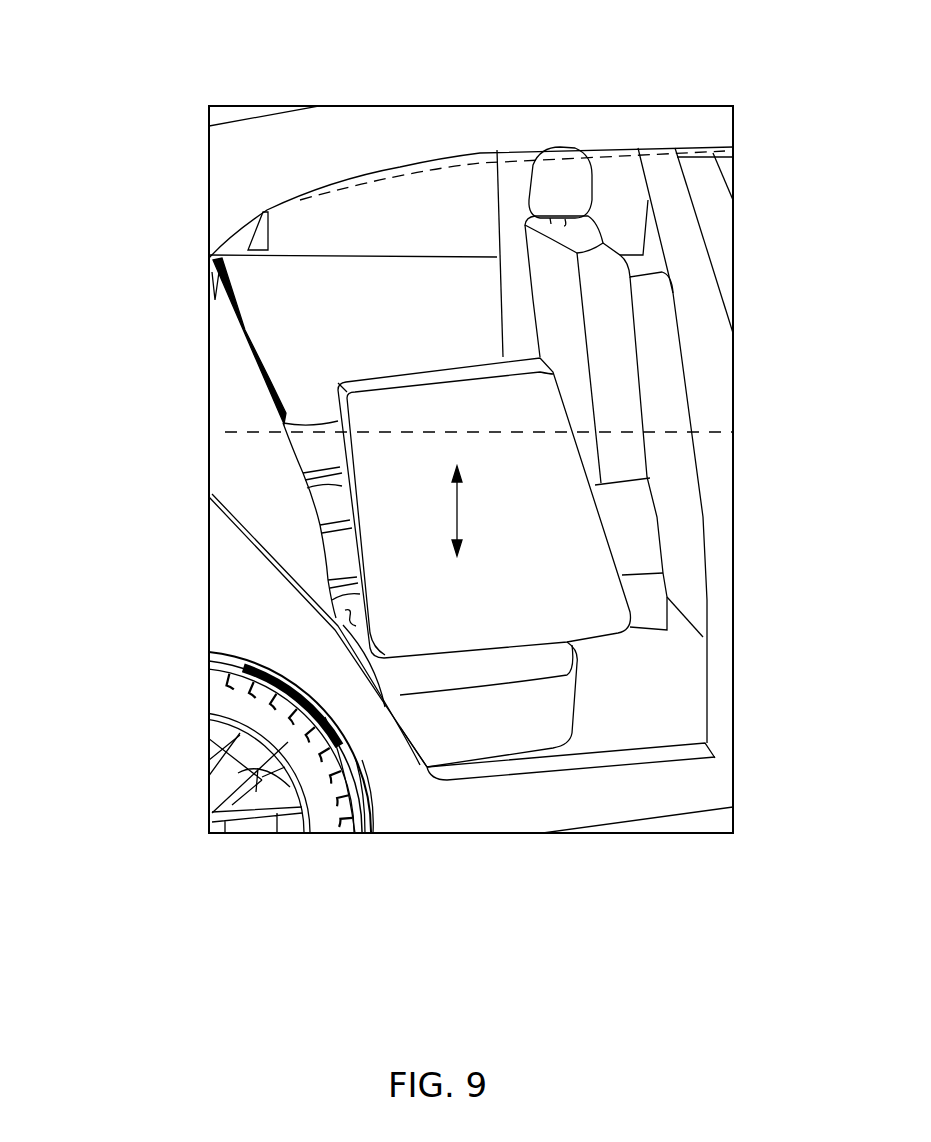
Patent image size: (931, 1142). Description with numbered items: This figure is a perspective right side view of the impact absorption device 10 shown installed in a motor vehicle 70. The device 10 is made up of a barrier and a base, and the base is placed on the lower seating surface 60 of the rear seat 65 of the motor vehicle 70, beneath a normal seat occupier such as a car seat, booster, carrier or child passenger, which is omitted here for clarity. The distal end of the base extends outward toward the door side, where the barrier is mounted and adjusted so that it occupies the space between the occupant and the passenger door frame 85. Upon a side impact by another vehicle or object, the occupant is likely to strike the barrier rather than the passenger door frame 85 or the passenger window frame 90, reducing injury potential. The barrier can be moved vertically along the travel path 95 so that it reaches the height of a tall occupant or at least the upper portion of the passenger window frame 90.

The impact absorption device 10 is at (140, 876).
The lower seating surface 60 is at (336, 618).
The rear seat 65 is at (533, 707).
The motor vehicle 70 is at (285, 150).
The passenger door frame 85 is at (677, 430).
The passenger window frame 90 is at (453, 167).
The travel path "a" 95 is at (112, 655).